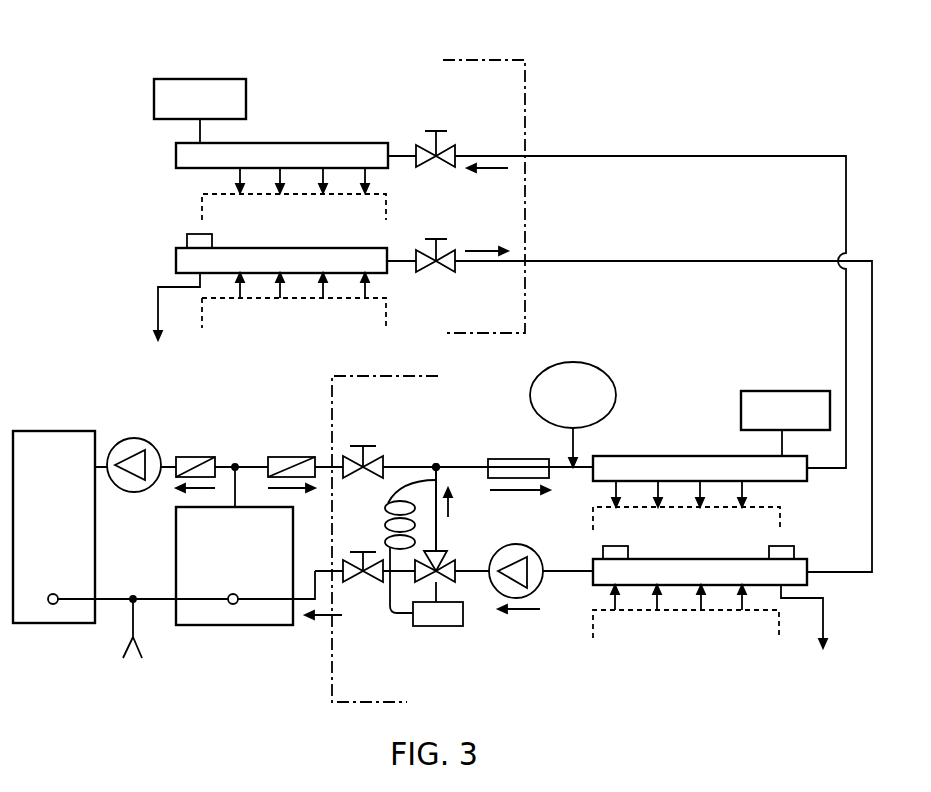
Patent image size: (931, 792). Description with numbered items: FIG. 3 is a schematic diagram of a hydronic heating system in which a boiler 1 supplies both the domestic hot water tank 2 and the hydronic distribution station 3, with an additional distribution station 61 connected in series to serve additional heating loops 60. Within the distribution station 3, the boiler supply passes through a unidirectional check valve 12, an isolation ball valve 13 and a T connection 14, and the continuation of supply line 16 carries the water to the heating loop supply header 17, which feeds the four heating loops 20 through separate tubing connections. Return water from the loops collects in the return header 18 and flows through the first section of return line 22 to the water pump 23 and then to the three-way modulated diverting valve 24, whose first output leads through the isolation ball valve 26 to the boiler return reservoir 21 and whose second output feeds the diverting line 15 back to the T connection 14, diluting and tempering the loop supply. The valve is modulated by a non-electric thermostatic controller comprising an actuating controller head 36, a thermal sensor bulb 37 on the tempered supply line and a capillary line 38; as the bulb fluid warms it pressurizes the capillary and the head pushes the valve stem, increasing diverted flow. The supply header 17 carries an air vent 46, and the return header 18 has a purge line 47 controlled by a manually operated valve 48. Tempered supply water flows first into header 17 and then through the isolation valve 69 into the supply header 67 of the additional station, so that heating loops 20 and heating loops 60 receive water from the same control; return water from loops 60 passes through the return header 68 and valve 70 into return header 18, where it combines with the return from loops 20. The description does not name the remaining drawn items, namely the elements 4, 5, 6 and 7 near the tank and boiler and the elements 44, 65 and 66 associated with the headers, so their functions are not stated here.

The boiler 1 is at (176, 547).
The domestic hot water (DHW) tank 2 is at (55, 624).
The hydronic distribution station 3 is at (332, 684).
The domestic hot water loop 4 is at (165, 428).
The check valve 5 is at (191, 457).
The circulating pump 6 is at (133, 438).
The boiler fill connection 7 is at (139, 636).
The unidirectional check valve 12 is at (291, 457).
The isolation ball valve 13 is at (358, 446).
The T connection 14 is at (437, 465).
The diverting line 15 is at (437, 533).
The continuation of supply line 16 is at (469, 465).
The heating loop supply header 17 is at (806, 458).
The return header 18 is at (808, 580).
The heating loops 20 is at (775, 534).
The boiler return reservoir 21 is at (236, 595).
The first section of return line 22 is at (565, 571).
The water pump 23 is at (517, 544).
The three-way modulated diverting valve 24 is at (459, 583).
The isolation ball valve 26 is at (360, 552).
The actuating controller head 36 is at (435, 627).
The thermal sensor bulb 37 is at (495, 458).
The capillary line 38 is at (388, 502).
The temperature gauge 44 is at (615, 394).
The air vent 46 is at (741, 405).
The purge line 47 is at (823, 626).
The manually operated valve 48 is at (794, 549).
The additional heating loops 60 is at (212, 216).
The additional distribution station 61 is at (525, 88).
The drain line 65 is at (158, 305).
The air vent 66 is at (246, 101).
The supply header 67 is at (368, 143).
The return header 68 is at (386, 250).
The isolation valve 69 is at (436, 131).
The valve 70 is at (440, 239).